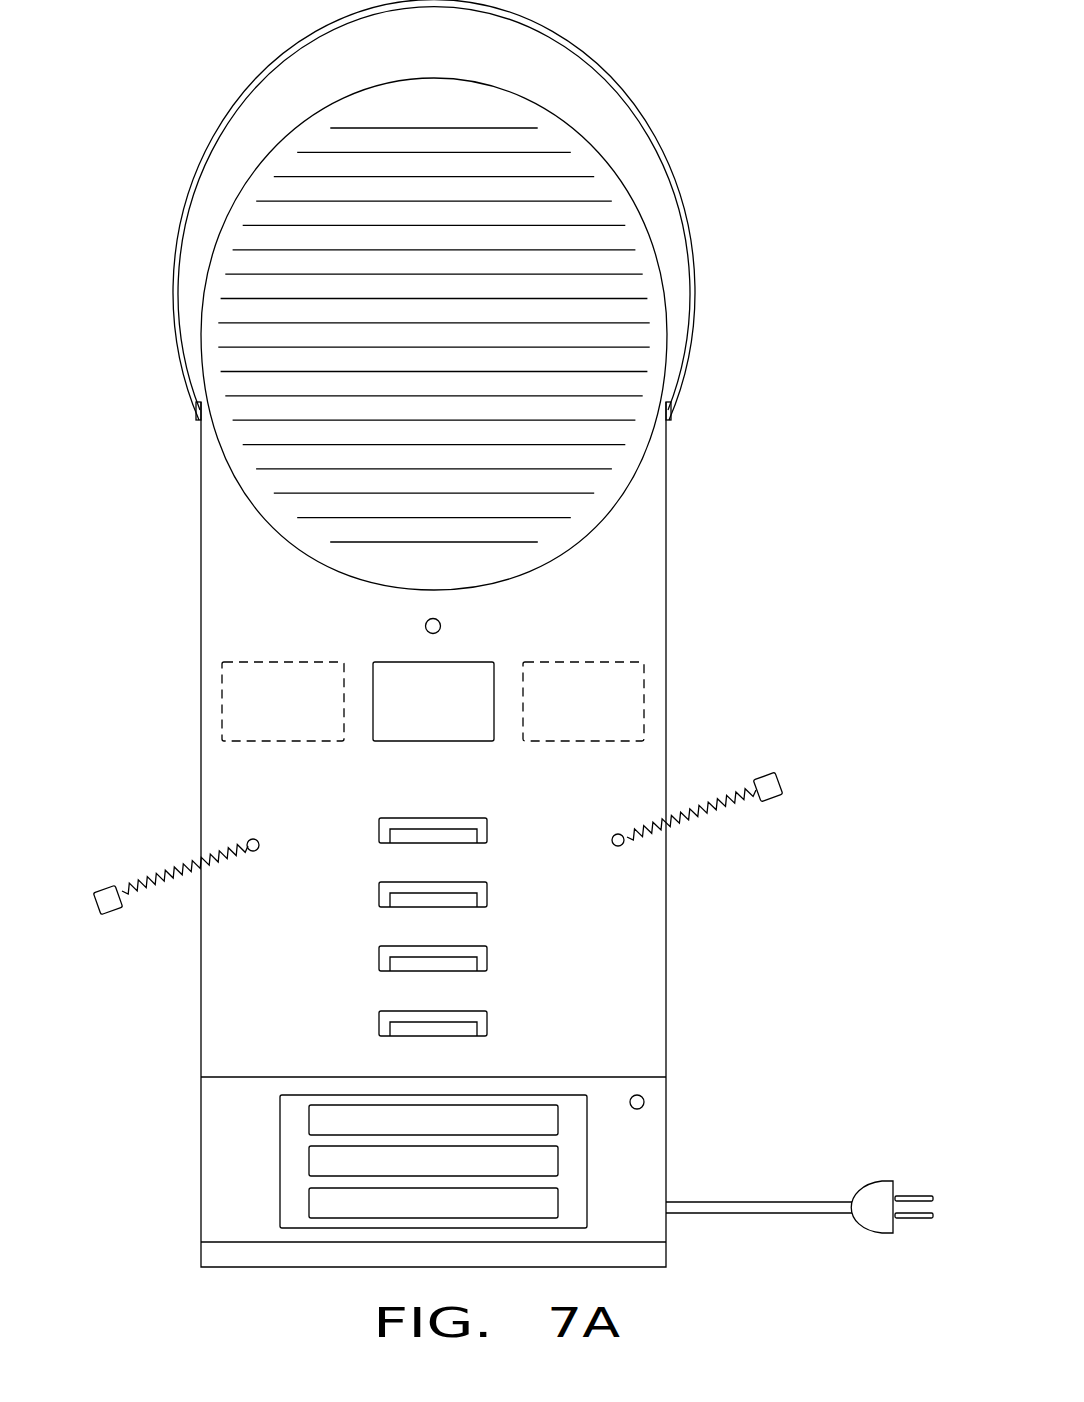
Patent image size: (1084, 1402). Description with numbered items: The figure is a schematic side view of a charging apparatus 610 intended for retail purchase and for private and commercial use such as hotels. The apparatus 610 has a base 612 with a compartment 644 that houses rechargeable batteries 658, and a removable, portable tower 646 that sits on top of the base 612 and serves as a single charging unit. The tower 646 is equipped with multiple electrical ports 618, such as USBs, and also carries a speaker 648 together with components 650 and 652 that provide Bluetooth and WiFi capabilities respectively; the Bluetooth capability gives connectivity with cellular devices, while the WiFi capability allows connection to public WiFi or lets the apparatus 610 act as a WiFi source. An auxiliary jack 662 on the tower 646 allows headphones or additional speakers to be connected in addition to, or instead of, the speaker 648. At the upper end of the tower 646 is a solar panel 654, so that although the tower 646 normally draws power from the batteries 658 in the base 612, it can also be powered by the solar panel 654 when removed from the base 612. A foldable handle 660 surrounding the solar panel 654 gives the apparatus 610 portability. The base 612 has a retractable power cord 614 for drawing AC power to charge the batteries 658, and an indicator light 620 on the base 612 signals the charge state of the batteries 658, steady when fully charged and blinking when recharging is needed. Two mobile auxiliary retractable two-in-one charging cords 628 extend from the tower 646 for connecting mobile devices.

The charging apparatus 610 is at (768, 61).
The foldable handle 660 is at (210, 142).
The solar panel 654 is at (598, 455).
The portable tower 646 is at (237, 588).
The auxiliary jack 662 is at (441, 624).
The speaker 648 is at (393, 660).
The Bluetooth component 650 is at (222, 702).
The WiFi component 652 is at (493, 697).
The retractable 2-in-1 charging cords 628 is at (157, 880).
The electrical ports 618 is at (379, 830).
The compartment 644 is at (210, 1090).
The indicator light 620 is at (644, 1101).
The rechargeable batteries 658 is at (314, 1205).
The retractable power cord 614 is at (885, 1180).
The base 612 is at (207, 1255).